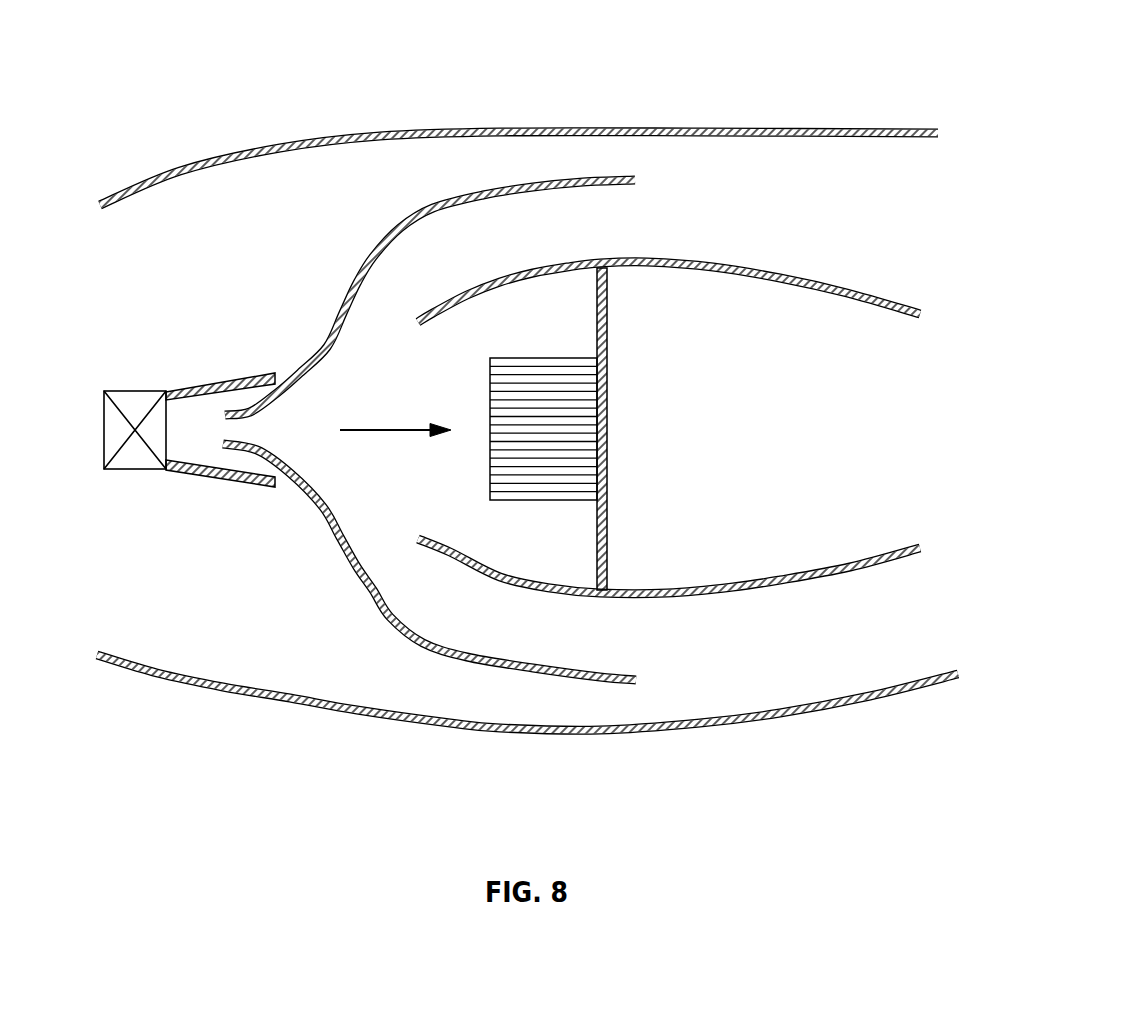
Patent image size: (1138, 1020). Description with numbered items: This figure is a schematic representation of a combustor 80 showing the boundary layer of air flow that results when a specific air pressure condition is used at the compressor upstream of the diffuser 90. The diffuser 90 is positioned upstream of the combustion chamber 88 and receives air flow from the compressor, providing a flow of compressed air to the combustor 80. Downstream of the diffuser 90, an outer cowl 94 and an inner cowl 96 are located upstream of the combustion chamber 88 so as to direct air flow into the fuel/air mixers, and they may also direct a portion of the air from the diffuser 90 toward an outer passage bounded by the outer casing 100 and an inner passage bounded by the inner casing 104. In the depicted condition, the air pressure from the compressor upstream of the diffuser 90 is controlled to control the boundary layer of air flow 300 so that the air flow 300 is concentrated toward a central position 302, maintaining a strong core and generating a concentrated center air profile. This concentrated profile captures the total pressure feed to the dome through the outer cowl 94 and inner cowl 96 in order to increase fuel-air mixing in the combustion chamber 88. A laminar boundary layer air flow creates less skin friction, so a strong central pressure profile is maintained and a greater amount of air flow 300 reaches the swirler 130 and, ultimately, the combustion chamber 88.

The combustor 80 is at (1048, 72).
The combustion chamber 88 is at (683, 444).
The diffuser 90 is at (220, 483).
The outer cowl 94 is at (517, 270).
The inner cowl 96 is at (563, 597).
The outer casing 100 is at (705, 128).
The inner casing 104 is at (767, 723).
The swirler 130 is at (508, 500).
The air flow 300 is at (410, 638).
The central position 302 is at (381, 432).